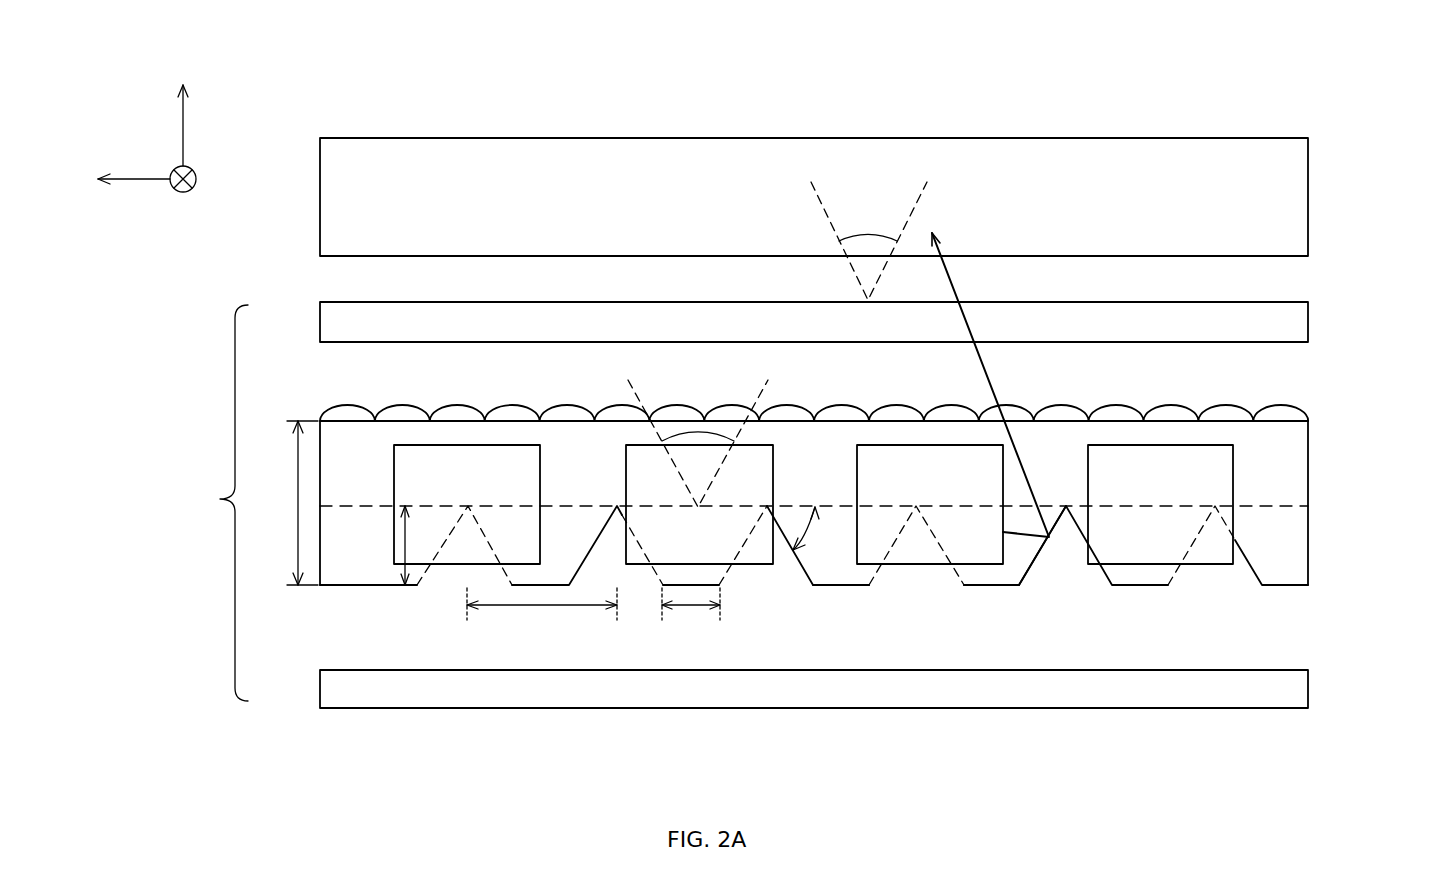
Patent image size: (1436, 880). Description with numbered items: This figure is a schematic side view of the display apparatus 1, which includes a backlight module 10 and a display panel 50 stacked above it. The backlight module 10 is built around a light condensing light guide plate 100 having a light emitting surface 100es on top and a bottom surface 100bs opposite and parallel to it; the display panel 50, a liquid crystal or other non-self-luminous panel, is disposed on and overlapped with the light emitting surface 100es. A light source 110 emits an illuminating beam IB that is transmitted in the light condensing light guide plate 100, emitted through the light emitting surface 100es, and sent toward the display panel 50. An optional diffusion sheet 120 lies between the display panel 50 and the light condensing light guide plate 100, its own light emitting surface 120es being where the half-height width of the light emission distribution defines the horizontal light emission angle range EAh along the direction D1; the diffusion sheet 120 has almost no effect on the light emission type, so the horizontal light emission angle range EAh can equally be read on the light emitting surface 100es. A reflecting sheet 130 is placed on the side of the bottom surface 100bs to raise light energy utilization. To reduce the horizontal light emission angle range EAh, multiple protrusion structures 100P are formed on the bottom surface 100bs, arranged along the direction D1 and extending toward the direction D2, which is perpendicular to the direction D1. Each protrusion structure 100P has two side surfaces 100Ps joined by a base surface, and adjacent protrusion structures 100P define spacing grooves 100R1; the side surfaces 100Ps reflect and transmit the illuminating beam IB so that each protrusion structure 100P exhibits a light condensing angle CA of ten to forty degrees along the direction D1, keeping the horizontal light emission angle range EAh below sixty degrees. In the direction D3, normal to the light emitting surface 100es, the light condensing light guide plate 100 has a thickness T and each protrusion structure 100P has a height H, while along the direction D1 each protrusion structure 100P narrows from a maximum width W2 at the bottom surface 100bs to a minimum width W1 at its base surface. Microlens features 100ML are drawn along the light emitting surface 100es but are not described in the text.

The display apparatus 1 is at (1343, 806).
The backlight module 10 is at (214, 503).
The display panel 50 is at (1290, 192).
The light condensing light guide plate 100 is at (878, 440).
The microlens structures 100ML is at (567, 405).
The protrusion structures 100P is at (1242, 537).
The side surfaces 100Ps is at (1047, 548).
The spacing grooves 100R1 is at (1052, 580).
The bottom surface 100bs is at (1277, 507).
The light emitting surface 100es is at (1270, 420).
The light source 110 is at (1237, 465).
The diffusion sheet 120 is at (1290, 320).
The light emitting surface of the diffusion sheet 120es is at (368, 299).
The reflecting sheet 130 is at (1290, 693).
The horizontal light emission angle range EAh is at (868, 232).
The illuminating beam IB is at (957, 293).
The light condensing angle CA is at (697, 430).
The thickness T is at (295, 503).
The height H is at (405, 544).
The minimum width W1 is at (691, 618).
The maximum width W2 is at (542, 618).
The direction D1 is at (117, 180).
The direction D2 is at (185, 199).
The direction D3 is at (180, 110).